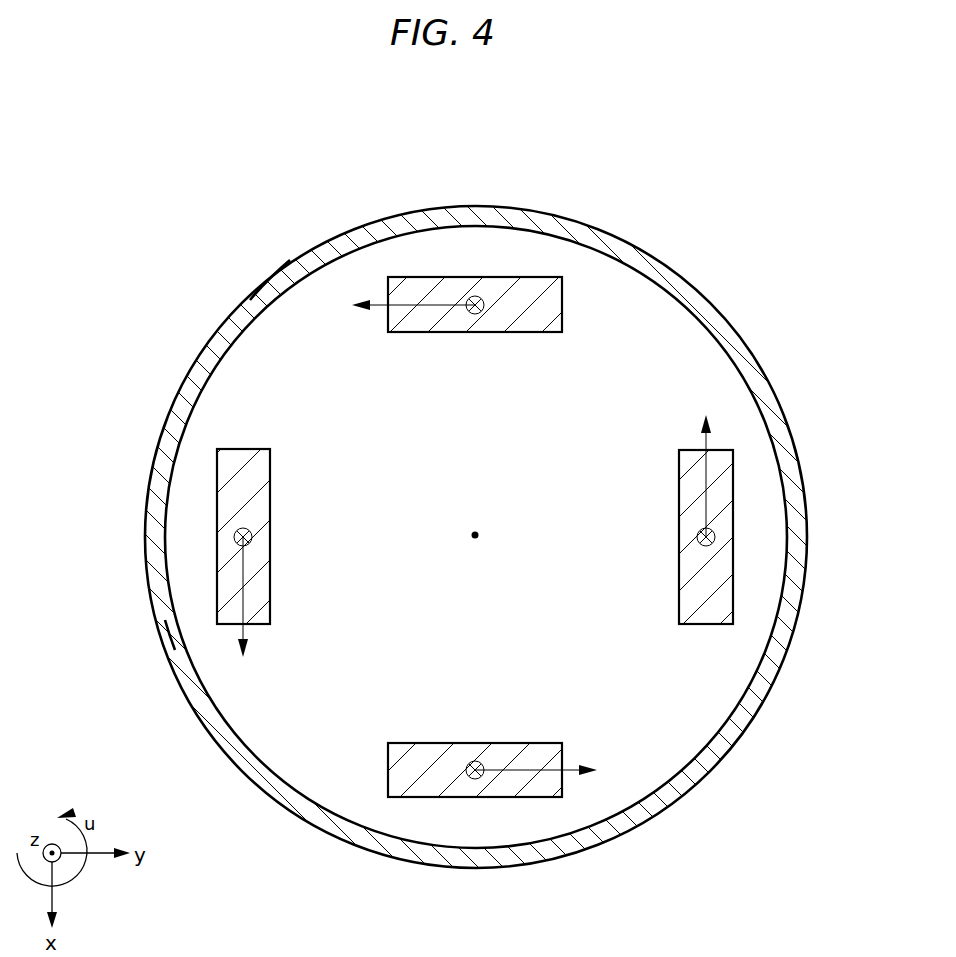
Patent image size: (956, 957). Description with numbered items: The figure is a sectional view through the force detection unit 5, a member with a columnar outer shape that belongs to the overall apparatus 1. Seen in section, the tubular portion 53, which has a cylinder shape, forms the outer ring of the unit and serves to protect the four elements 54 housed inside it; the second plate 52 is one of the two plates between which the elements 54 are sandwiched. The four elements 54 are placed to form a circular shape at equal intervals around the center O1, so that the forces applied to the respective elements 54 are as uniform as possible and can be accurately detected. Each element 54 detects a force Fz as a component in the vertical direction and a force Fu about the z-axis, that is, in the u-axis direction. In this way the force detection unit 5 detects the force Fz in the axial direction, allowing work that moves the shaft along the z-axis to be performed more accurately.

The mobile robot 1 is at (157, 200).
The force detection unit 5 is at (670, 227).
The second plate 52 is at (330, 308).
The tubular portion 53 is at (170, 637).
The element 54 is at (532, 285).
The center of body O1 is at (475, 533).
The force Fu is at (382, 299).
The force Fz is at (475, 296).